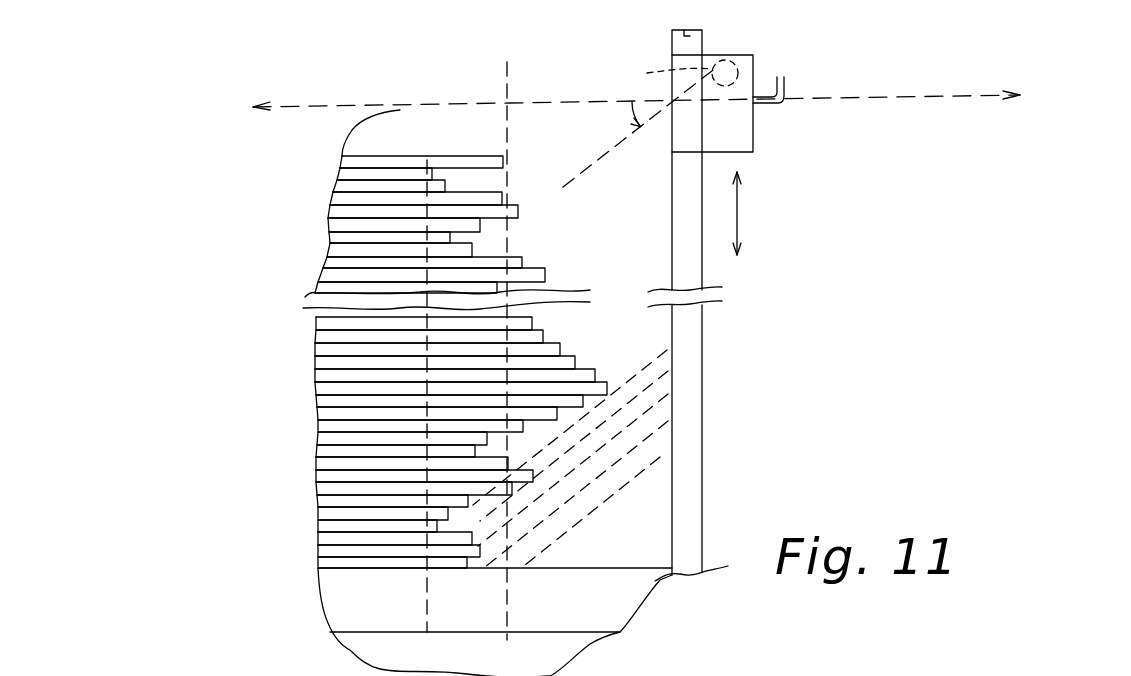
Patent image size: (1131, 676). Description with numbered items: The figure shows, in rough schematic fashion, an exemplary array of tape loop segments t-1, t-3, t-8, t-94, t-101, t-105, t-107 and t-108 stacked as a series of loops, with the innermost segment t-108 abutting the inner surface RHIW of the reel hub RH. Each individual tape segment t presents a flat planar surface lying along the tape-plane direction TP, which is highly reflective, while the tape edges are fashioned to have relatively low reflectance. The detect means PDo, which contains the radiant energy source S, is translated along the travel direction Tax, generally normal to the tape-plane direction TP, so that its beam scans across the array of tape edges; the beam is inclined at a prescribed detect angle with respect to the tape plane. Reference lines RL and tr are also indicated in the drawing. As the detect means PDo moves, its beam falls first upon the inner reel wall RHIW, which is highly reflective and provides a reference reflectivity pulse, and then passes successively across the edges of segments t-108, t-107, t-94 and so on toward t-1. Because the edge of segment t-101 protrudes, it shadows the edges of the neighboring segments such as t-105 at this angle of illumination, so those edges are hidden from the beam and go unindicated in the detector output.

The tape loop segment t-1 is at (340, 188).
The tape loop segment t-3 is at (330, 215).
The tape loop segment t-8 is at (330, 273).
The tape loop segment t-94 is at (315, 390).
The tape loop segment t-101 is at (320, 475).
The tape loop segment t-105 is at (318, 528).
The tape loop segment t-107 is at (320, 556).
The tape loop segment t-108 is at (320, 567).
The tape-plane direction TP is at (636, 97).
The reference line RL is at (503, 352).
The tooth reference line tr is at (443, 369).
The radiant energy source means S is at (663, 66).
The detect means PDo is at (763, 65).
The direction of travel of detector Tax is at (779, 213).
The tooth t is at (442, 568).
The inner surface of reel hub RHIW is at (625, 565).
The reel hub RH is at (345, 612).